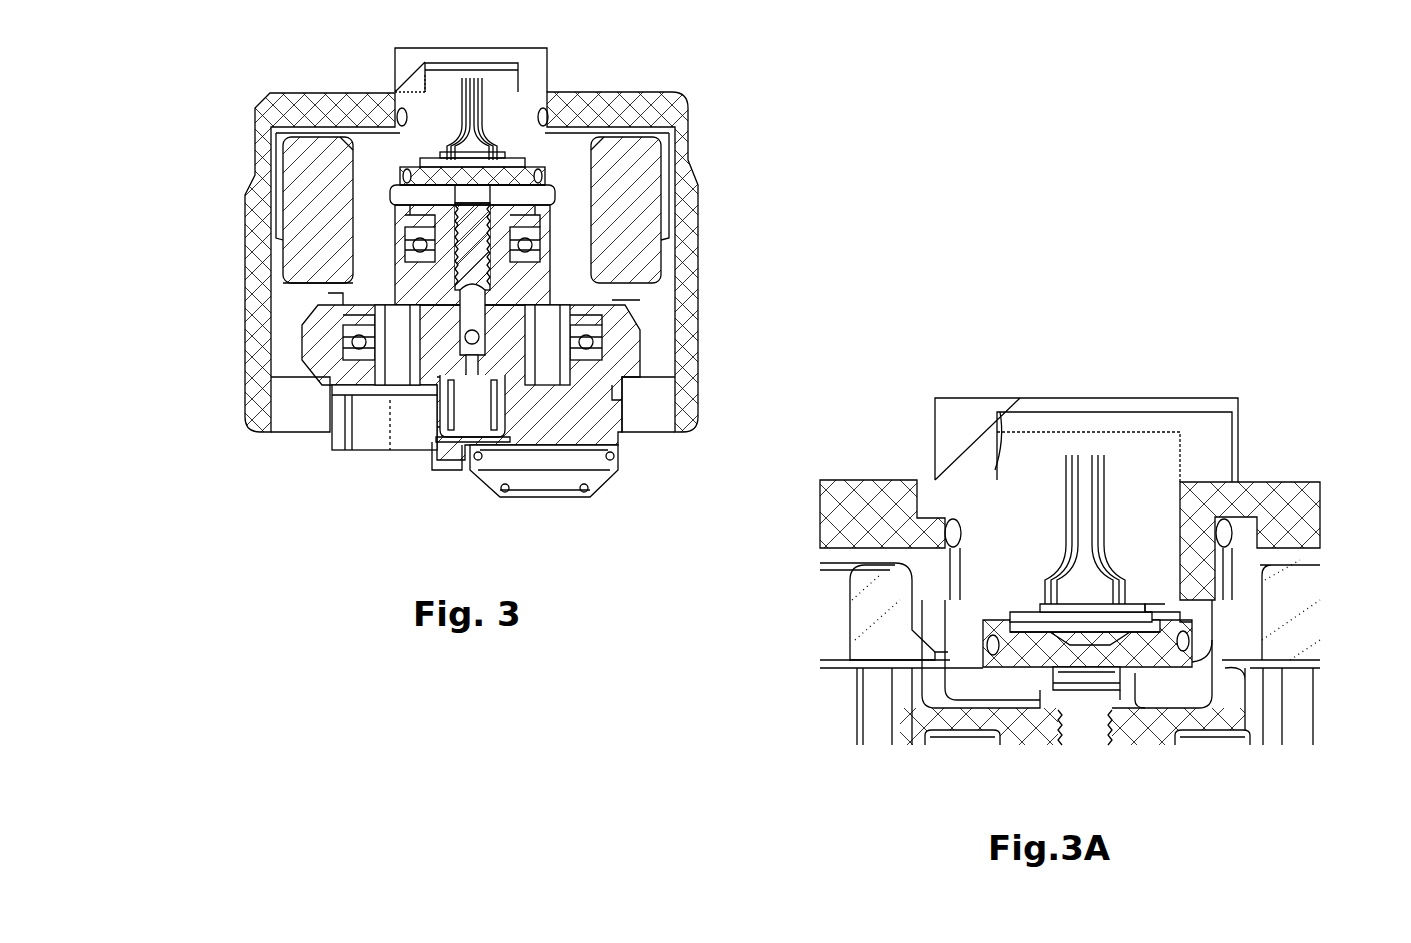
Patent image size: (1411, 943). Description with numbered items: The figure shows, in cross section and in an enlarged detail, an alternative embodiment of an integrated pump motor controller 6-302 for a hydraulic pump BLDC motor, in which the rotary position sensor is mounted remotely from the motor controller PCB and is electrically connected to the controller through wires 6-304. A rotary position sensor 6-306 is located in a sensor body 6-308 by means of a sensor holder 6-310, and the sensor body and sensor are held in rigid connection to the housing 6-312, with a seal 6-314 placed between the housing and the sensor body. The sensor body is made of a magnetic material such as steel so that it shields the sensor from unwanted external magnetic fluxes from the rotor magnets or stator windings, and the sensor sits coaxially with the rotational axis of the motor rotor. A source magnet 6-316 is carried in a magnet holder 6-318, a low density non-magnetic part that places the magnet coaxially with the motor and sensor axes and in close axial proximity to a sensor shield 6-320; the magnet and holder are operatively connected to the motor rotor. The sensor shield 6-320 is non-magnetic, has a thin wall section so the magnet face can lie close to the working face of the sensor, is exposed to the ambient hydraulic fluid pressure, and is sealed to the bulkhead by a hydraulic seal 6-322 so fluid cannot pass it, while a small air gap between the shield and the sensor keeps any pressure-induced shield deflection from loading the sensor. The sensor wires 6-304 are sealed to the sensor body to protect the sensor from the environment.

In FIG. 3, the integrated pump motor controller 302 is at (758, 152).
In FIG. 3A, the wires 304 is at (1068, 577).
In FIG. 3, the rotary position sensor 306 is at (468, 161).
In FIG. 3A, the rotary position sensor 306 is at (1066, 632).
In FIG. 3A, the sensor body 308 is at (960, 466).
In FIG. 3A, the sensor holder 310 is at (1158, 620).
In FIG. 3, the housing 312 is at (690, 272).
In FIG. 3A, the seal 314 is at (950, 540).
In FIG. 3A, the source magnet 316 is at (1070, 672).
In FIG. 3A, the magnet holder 318 is at (1127, 698).
In FIG. 3A, the sensor shield 320 is at (1158, 640).
In FIG. 3A, the hydraulic seal 322 is at (975, 645).